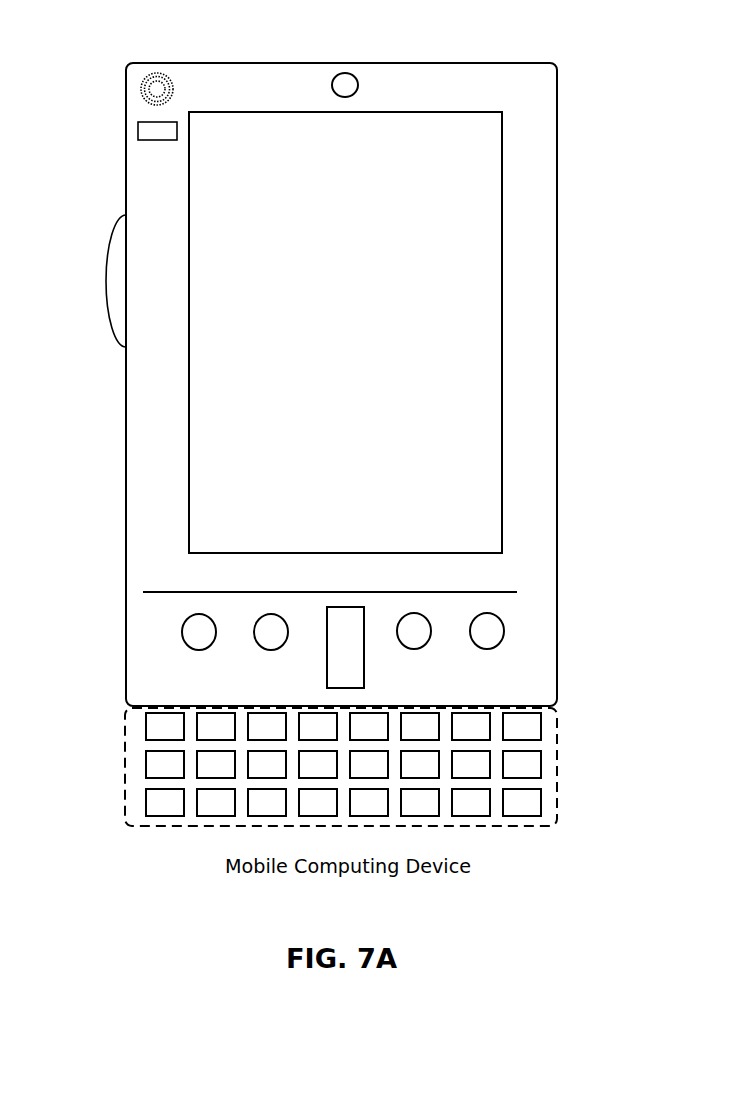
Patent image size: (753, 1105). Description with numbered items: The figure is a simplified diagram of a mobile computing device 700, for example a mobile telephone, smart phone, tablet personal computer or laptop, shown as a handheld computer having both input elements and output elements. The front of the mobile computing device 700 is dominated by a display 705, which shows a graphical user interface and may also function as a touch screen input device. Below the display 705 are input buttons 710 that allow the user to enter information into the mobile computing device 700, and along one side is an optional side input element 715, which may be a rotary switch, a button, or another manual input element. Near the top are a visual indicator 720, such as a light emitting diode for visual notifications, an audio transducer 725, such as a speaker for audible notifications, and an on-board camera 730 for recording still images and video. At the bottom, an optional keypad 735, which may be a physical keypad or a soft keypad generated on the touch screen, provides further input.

The mobile computing device 700 is at (557, 88).
The display 705 is at (213, 414).
The input buttons 710 is at (327, 656).
The side input element 715 is at (106, 269).
The visual indicator 720 is at (138, 128).
The audio transducer 725 is at (140, 81).
The on-board camera 730 is at (338, 72).
The keypad 735 is at (137, 769).